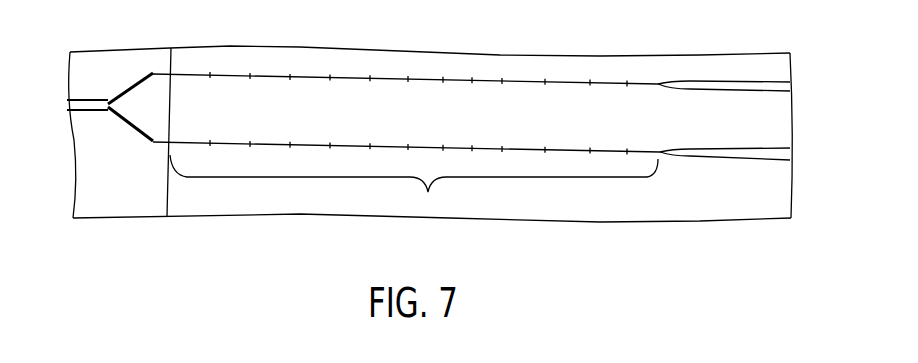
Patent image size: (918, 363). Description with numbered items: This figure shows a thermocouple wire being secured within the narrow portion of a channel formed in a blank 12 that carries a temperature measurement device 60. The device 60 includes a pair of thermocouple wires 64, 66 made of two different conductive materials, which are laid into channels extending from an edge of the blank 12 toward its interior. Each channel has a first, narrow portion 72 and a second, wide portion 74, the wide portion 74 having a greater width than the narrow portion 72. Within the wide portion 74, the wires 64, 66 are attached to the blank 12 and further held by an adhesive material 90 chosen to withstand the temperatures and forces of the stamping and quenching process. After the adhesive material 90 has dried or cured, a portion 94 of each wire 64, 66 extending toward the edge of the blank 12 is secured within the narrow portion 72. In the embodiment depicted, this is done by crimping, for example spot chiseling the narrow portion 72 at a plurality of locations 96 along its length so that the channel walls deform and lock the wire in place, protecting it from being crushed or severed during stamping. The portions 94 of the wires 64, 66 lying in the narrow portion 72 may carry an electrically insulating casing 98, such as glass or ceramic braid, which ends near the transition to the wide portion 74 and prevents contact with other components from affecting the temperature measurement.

The blank 12 is at (782, 118).
The temperature measurement device 60 is at (126, 82).
The thermocouple wire 64 is at (240, 74).
The thermocouple wire 66 is at (262, 143).
The narrow portion 72 is at (603, 82).
The wide portion 74 is at (733, 82).
The adhesive material 90 is at (764, 88).
The portion of the wires 94 is at (414, 187).
The locations 96 is at (472, 80).
The casing 98 is at (82, 100).